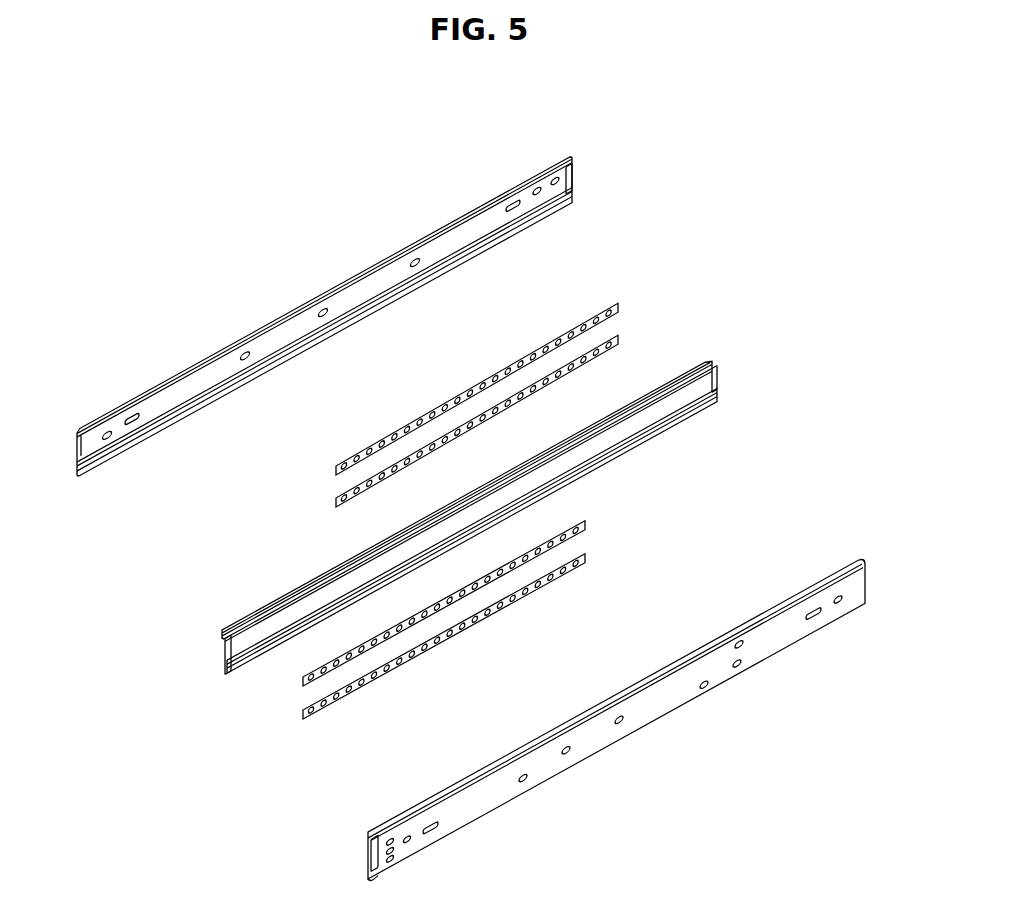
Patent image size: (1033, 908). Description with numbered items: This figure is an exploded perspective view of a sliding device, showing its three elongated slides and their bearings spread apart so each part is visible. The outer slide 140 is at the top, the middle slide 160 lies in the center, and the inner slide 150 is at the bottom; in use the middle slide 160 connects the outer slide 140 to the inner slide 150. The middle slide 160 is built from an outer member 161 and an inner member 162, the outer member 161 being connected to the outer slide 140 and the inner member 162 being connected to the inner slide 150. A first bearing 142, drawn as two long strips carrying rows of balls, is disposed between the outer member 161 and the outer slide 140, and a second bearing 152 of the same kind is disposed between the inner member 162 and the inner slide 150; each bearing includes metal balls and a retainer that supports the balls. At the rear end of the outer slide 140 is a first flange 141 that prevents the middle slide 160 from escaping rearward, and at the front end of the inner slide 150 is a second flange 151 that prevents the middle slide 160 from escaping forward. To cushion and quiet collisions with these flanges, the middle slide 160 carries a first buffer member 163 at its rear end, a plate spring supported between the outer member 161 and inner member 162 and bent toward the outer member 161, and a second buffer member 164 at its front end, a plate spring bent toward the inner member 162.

The outer slide 140 is at (358, 271).
The first flange 141 is at (575, 148).
The first bearing 142 is at (336, 467).
The inner slide 150 is at (599, 673).
The second flange 151 is at (373, 858).
The second bearing 152 is at (303, 680).
The middle slide 160 is at (472, 475).
The outer member 161 is at (467, 499).
The inner member 162 is at (471, 522).
The first buffer member 163 is at (712, 350).
The second buffer member 164 is at (228, 654).